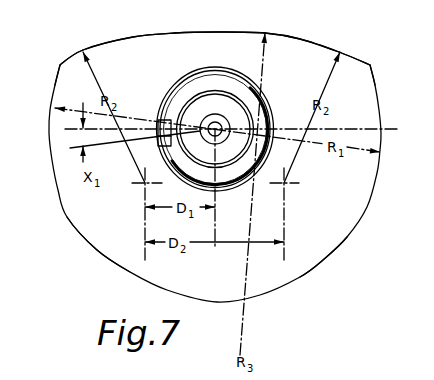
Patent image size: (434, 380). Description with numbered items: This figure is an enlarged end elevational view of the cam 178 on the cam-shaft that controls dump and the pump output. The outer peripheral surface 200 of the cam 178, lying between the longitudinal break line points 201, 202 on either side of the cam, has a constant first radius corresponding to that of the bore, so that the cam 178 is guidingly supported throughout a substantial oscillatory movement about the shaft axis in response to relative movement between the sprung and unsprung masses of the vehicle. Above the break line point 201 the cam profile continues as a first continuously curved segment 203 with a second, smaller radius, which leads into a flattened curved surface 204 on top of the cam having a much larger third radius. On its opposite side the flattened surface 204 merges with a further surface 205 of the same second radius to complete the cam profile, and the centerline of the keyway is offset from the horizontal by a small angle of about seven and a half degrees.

The outer peripheral surface 200 is at (97, 250).
The longitudinal break line point 201 is at (370, 65).
The longitudinal break line point 202 is at (60, 65).
The first continuously curved segment 203 is at (340, 50).
The flattened curved surface 204 is at (267, 32).
The surface 205 is at (83, 50).
The cam 178 is at (317, 248).